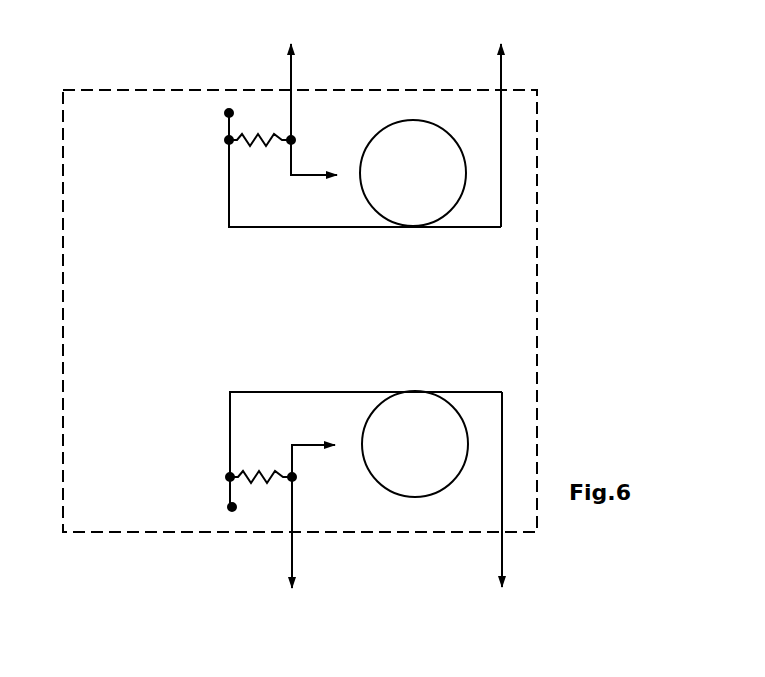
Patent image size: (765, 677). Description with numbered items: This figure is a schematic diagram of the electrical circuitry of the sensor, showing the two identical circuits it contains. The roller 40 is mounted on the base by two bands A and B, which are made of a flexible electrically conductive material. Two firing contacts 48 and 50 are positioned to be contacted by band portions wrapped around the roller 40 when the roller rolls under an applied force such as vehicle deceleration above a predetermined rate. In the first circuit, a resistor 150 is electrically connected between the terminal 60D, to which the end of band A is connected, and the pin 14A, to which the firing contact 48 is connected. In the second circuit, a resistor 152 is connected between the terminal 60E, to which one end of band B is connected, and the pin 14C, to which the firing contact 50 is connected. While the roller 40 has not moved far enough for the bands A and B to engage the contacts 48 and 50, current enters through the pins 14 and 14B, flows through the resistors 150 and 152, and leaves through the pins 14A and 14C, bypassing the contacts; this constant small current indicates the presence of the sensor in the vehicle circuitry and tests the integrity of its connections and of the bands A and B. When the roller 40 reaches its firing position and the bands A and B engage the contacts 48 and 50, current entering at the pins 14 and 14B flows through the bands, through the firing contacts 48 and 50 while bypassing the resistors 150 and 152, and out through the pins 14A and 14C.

The pin 14 is at (499, 123).
The pin 14A is at (288, 80).
The pin 14B is at (502, 506).
The pin 14C is at (292, 548).
The roller 40 is at (423, 447).
The firing contact 48 is at (327, 173).
The firing contact 50 is at (336, 445).
The terminal 60D is at (229, 110).
The terminal 60E is at (229, 510).
The resistor 150 is at (262, 145).
The resistor 152 is at (262, 472).
The band A is at (473, 229).
The band B is at (475, 388).